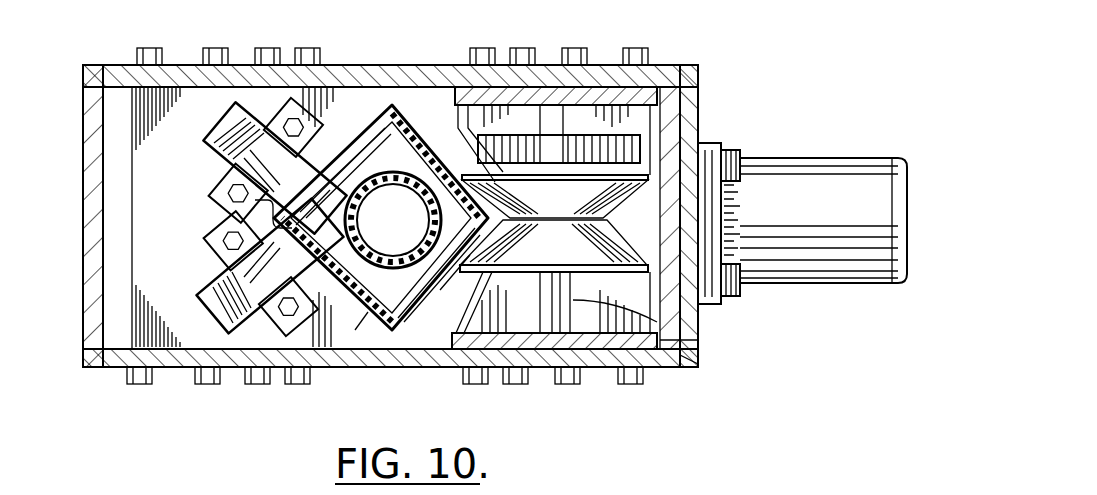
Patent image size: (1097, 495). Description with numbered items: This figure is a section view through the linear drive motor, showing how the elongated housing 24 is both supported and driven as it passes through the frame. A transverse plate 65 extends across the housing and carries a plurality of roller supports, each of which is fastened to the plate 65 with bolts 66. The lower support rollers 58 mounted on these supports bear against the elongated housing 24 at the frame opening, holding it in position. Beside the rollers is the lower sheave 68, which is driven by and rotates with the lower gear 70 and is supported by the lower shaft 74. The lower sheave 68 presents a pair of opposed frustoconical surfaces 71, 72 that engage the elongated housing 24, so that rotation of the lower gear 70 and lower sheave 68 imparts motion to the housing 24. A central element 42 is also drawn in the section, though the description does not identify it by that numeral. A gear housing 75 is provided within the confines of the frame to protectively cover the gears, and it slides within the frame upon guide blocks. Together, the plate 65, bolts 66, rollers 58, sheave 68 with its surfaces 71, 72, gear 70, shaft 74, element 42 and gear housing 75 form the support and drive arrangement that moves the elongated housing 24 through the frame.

The elongated housing 24 is at (368, 312).
The rotor hub 42 is at (403, 172).
The lower support rollers 58 is at (212, 182).
The transverse plate 65 is at (150, 236).
The bolts 66 is at (207, 48).
The lower sheave 68 is at (637, 142).
The lower gear 70 is at (697, 100).
The frustoconical surface 71 is at (726, 155).
The frustoconical surface 72 is at (732, 286).
The lower shaft 74 is at (698, 340).
The gear housing 75 is at (690, 367).